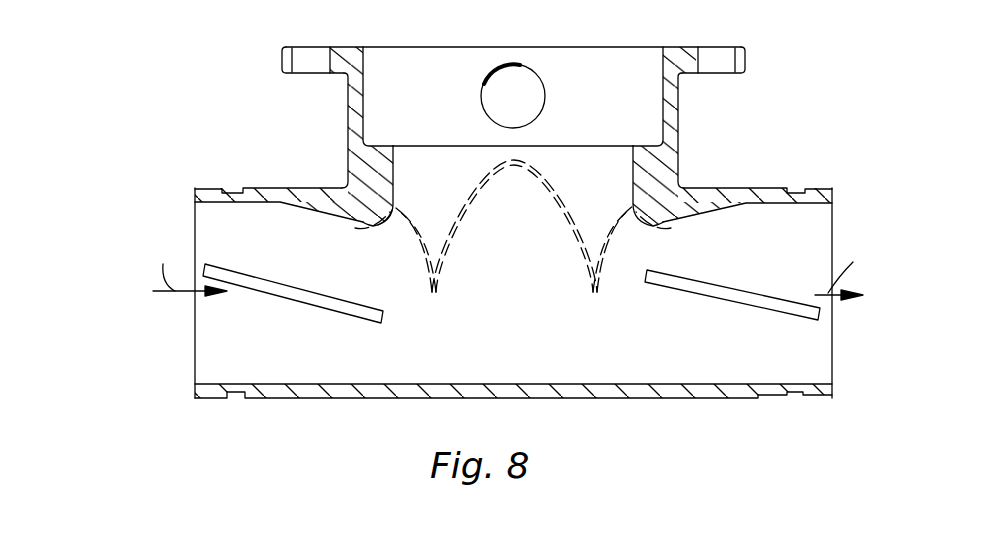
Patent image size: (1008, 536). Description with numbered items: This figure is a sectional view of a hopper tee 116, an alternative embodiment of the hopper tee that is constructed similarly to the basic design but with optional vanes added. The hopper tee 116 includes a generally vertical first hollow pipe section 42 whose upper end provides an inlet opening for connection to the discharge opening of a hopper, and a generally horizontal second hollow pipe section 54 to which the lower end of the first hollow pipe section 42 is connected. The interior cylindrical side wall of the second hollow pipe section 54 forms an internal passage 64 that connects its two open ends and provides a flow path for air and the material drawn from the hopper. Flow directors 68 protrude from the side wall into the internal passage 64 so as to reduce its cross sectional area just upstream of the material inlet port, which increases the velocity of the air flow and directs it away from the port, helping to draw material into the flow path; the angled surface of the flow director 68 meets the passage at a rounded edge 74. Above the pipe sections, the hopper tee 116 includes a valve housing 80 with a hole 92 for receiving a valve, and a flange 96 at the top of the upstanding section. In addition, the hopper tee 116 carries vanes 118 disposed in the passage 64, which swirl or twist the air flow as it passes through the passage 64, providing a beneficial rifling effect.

The first hollow pipe section 42 is at (680, 145).
The second hollow pipe section 54 is at (835, 392).
The internal passage 64 is at (520, 277).
The flow director element 68 is at (352, 230).
The rounded edge 74 is at (387, 226).
The valve housing 80 is at (680, 90).
The hole 92 is at (545, 93).
The flange 96 is at (746, 62).
The hopper tee 116 is at (156, 365).
The vanes 118 is at (342, 316).